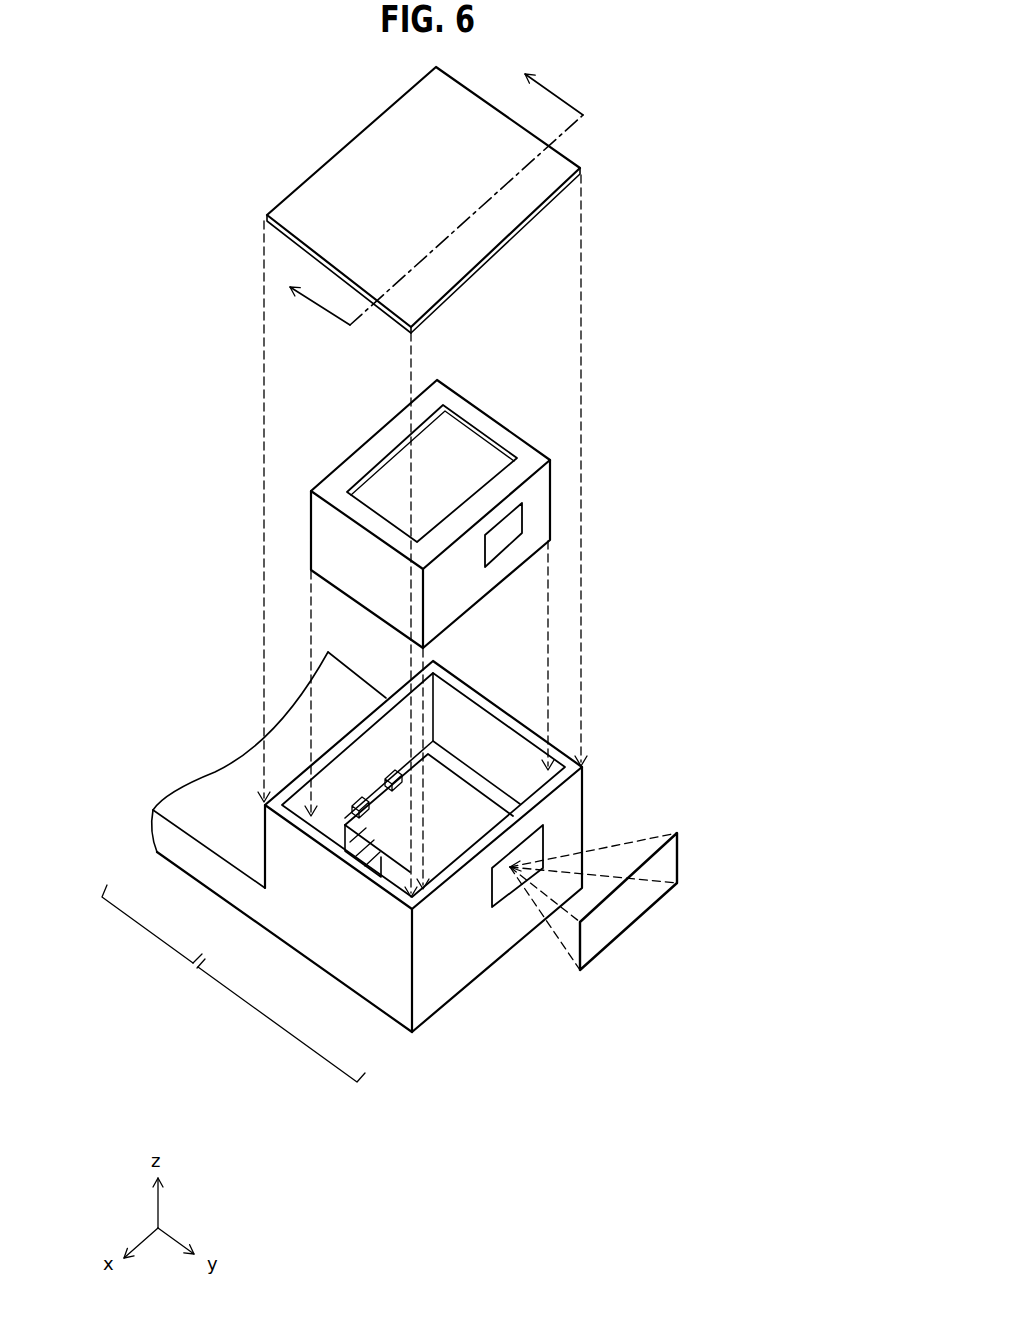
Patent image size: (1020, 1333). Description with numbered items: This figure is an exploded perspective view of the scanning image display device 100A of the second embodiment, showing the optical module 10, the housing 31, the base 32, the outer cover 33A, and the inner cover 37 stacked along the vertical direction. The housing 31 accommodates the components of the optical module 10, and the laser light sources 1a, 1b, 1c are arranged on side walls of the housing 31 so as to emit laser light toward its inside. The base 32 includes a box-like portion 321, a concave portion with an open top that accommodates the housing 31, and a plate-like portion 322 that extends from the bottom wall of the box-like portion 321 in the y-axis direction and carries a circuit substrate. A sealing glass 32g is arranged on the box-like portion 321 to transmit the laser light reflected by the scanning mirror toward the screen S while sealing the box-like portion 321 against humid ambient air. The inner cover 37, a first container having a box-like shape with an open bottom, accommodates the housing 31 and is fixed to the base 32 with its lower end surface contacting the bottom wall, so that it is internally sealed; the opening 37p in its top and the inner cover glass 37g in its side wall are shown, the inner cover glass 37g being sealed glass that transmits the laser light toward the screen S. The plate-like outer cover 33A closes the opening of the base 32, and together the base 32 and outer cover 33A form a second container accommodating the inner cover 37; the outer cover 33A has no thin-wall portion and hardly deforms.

The scanning image display device 100A is at (640, 132).
The outer cover 33A is at (365, 152).
The inner cover 37 is at (333, 487).
The holder opening 37p is at (465, 443).
The inner cover glass 37g is at (510, 523).
The base 32 is at (440, 969).
The housing 31 is at (442, 797).
The sealing glass 32g is at (535, 848).
The plate-like portion 322 is at (147, 931).
The box-like portion 321 is at (274, 1026).
The optical module 10 is at (462, 820).
The laser light source 1a is at (397, 765).
The laser light source 1b is at (363, 852).
The laser light source 1c is at (360, 795).
The screen S is at (632, 905).